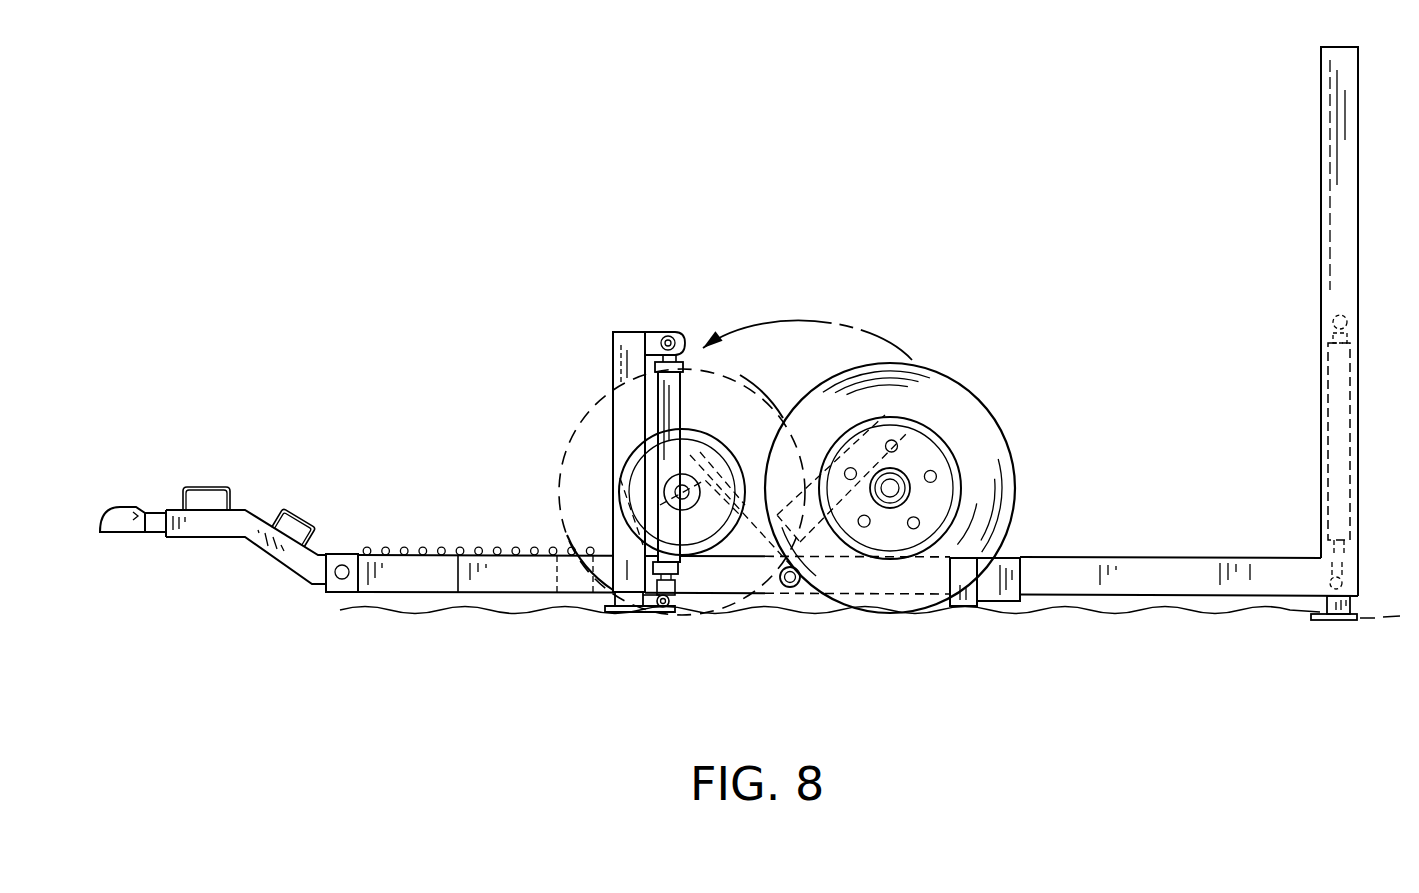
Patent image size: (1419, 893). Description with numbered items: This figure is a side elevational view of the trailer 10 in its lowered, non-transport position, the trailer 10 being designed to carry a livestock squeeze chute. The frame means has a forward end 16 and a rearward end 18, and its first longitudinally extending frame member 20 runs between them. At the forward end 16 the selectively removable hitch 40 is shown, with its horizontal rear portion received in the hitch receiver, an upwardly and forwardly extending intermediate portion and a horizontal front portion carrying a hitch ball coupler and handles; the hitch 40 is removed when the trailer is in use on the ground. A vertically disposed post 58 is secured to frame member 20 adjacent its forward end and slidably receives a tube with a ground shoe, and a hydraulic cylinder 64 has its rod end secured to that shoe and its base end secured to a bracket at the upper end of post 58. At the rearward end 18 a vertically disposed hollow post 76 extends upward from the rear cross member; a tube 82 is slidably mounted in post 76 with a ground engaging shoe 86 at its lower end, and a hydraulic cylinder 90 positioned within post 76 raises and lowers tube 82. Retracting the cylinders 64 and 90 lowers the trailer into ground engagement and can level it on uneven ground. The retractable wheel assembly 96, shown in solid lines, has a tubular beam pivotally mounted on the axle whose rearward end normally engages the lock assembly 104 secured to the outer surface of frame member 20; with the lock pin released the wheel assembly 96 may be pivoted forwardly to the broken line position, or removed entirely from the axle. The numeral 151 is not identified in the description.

The trailer 10 is at (1222, 172).
The forward end 16 is at (293, 592).
The rearward end 18 is at (1387, 578).
The first longitudinally extending frame member 20 is at (1184, 538).
The selectively removable hitch 40 is at (266, 486).
The post 58 is at (595, 373).
The hydraulic cylinder 64 is at (700, 402).
The hollow post tube 76 is at (1333, 253).
The tube 82 is at (1327, 603).
The ground engaging shoe 86 is at (1313, 622).
The hydraulic cylinder 90 is at (1338, 416).
The retractable wheel assembly 96 is at (618, 488).
The lock assembly 104 is at (1025, 537).
The tire 151 is at (580, 432).